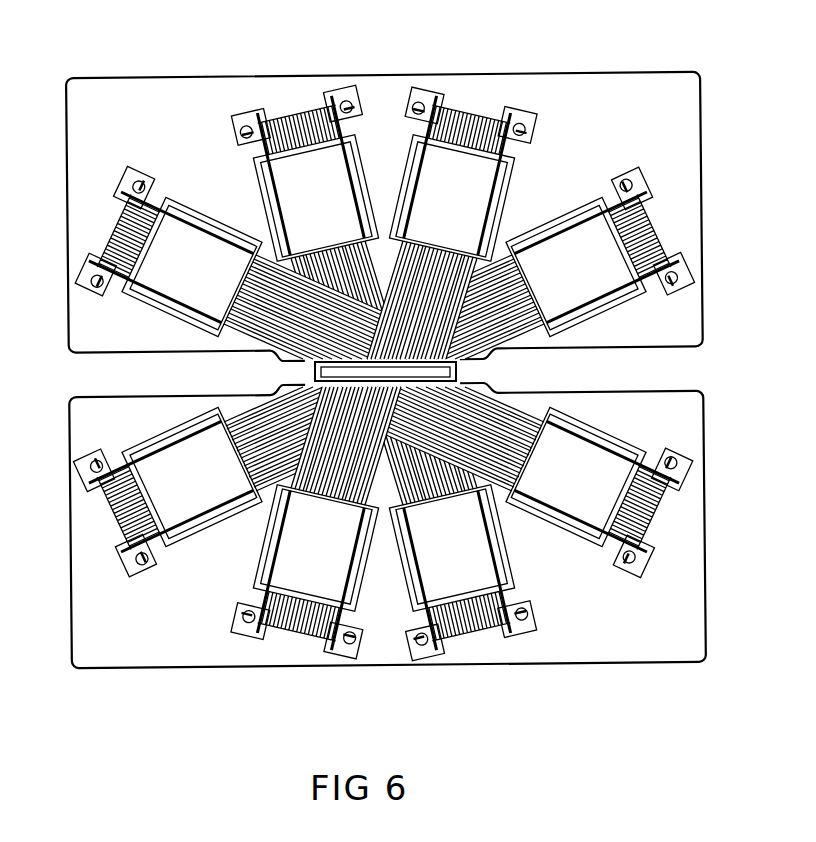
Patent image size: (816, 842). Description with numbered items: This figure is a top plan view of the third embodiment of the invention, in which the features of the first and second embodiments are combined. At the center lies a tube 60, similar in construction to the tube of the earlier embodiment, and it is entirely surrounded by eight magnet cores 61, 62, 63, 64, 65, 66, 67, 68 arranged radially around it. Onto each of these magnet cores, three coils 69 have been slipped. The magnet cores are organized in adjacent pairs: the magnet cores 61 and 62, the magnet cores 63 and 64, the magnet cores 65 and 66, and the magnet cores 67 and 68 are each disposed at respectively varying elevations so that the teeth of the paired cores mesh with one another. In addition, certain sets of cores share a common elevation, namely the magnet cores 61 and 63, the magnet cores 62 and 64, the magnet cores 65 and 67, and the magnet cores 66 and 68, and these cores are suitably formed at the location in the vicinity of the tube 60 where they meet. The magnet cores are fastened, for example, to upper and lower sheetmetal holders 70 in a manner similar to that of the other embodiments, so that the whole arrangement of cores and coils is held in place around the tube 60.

The tube 60 is at (457, 366).
The magnet core 61 is at (118, 534).
The magnet core 62 is at (300, 632).
The magnet core 63 is at (486, 632).
The magnet core 64 is at (603, 493).
The magnet core 65 is at (632, 227).
The magnet core 66 is at (476, 113).
The magnet core 67 is at (286, 113).
The magnet core 68 is at (120, 216).
The coil 69 is at (158, 295).
The sheetmetal holder 70 is at (493, 382).